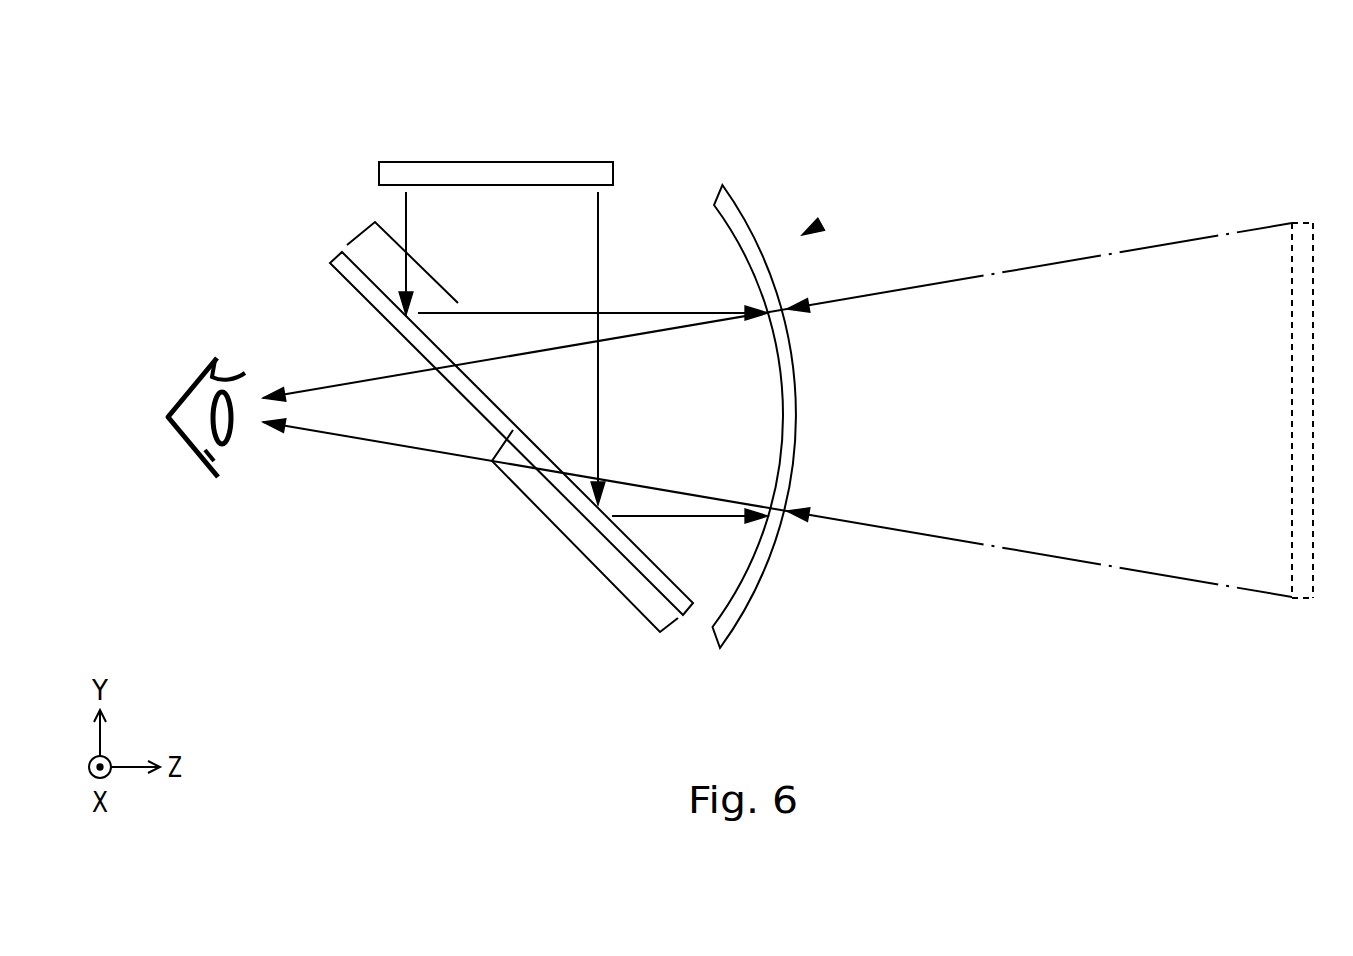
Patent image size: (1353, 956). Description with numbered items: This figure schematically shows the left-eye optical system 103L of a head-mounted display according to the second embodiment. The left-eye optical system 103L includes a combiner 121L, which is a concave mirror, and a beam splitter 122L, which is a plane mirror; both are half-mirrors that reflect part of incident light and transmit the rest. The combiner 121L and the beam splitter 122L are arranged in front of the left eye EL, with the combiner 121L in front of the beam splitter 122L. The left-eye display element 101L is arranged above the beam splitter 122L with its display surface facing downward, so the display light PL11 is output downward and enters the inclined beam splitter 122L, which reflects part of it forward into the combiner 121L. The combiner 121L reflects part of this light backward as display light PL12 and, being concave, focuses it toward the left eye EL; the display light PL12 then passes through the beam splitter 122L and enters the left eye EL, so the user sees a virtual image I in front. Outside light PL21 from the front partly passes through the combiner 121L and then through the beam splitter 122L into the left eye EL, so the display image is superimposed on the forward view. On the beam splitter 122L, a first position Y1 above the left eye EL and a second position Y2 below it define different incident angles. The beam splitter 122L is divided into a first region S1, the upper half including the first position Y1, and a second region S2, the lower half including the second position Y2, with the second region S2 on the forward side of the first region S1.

The left-eye display element 101L is at (520, 160).
The display light PL11 is at (403, 212).
The display light PL12 is at (593, 414).
The beam splitter 122L is at (340, 253).
The first region S1 is at (458, 303).
The second region S2 is at (572, 542).
The first position Y1 is at (457, 366).
The second position Y2 is at (570, 470).
The outside light PL21 is at (1163, 108).
The combiner 121L is at (797, 388).
The left-eye optical system 103L is at (821, 224).
The left eye EL is at (187, 438).
The virtual image I is at (1293, 220).